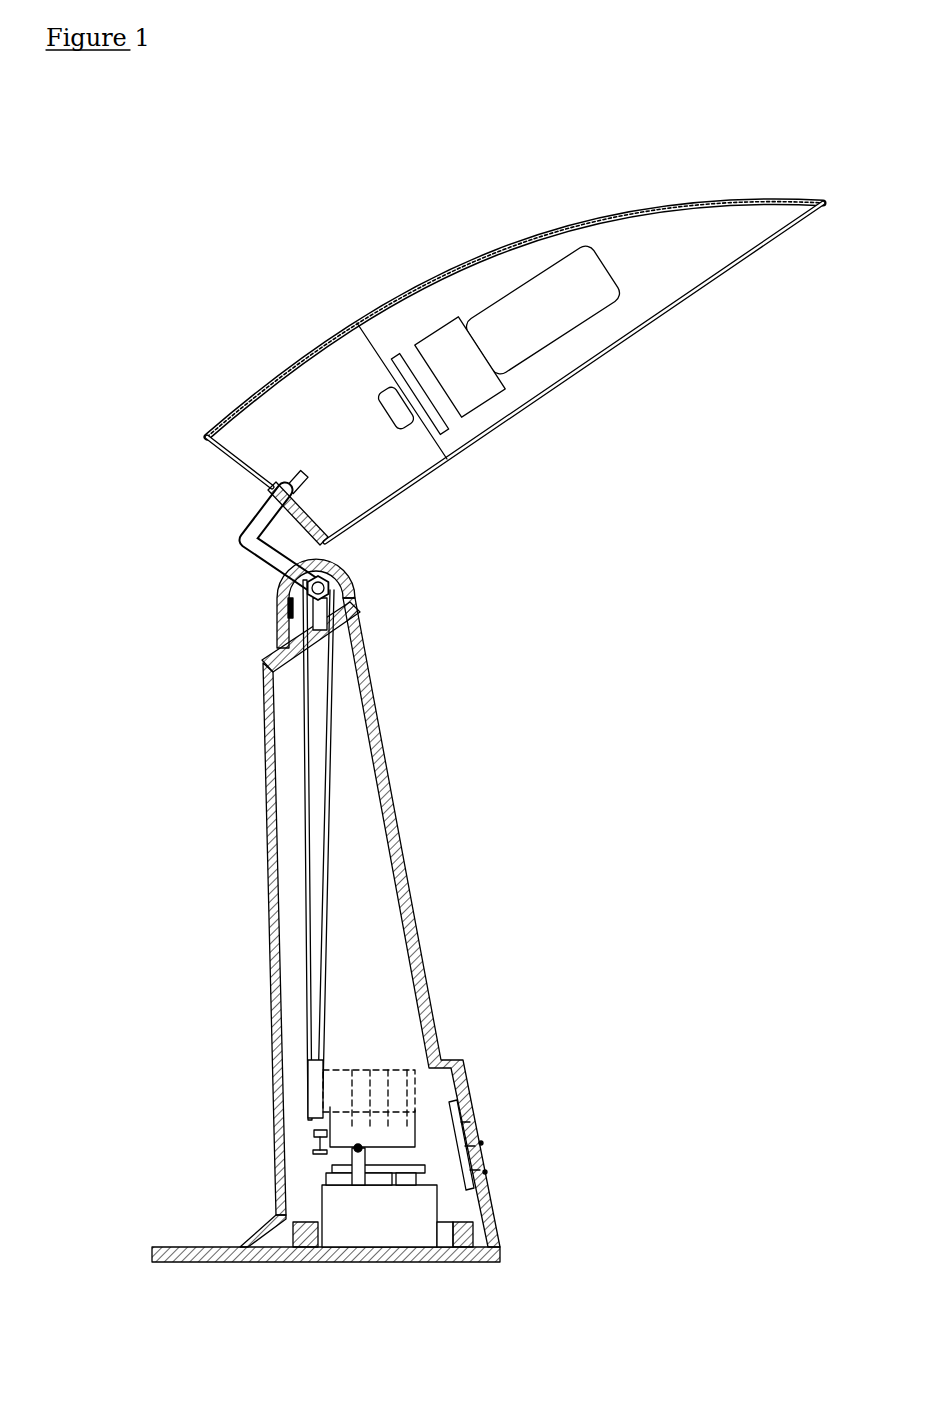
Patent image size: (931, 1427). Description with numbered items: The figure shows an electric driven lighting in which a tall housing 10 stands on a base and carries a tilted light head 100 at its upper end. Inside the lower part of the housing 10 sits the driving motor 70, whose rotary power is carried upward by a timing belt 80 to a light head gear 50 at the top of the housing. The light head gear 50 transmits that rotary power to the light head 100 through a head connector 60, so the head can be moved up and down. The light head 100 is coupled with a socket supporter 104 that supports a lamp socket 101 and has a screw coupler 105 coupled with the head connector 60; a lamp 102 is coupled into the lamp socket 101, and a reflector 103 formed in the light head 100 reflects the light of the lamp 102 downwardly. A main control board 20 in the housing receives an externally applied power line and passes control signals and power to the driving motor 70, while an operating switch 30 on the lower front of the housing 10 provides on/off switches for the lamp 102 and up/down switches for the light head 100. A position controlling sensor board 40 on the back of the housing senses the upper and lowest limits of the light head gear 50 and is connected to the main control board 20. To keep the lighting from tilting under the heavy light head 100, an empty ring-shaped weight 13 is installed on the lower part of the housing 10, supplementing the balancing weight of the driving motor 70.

The light head 100 is at (670, 208).
The lamp socket 101 is at (450, 352).
The lamp 102 is at (548, 298).
The reflector 103 is at (697, 273).
The socket supporter 104 is at (353, 390).
The screw coupler 105 is at (297, 480).
The head connector 60 is at (273, 557).
The light head gear 50 is at (362, 587).
The position controlling sensor board 40 is at (276, 622).
The housing 10 is at (266, 937).
The timing belt 80 is at (328, 880).
The driving motor 70 is at (425, 1055).
The main control board 20 is at (340, 1172).
The operating switch 30 is at (475, 1118).
The ring-shaped weight 13 is at (477, 1230).